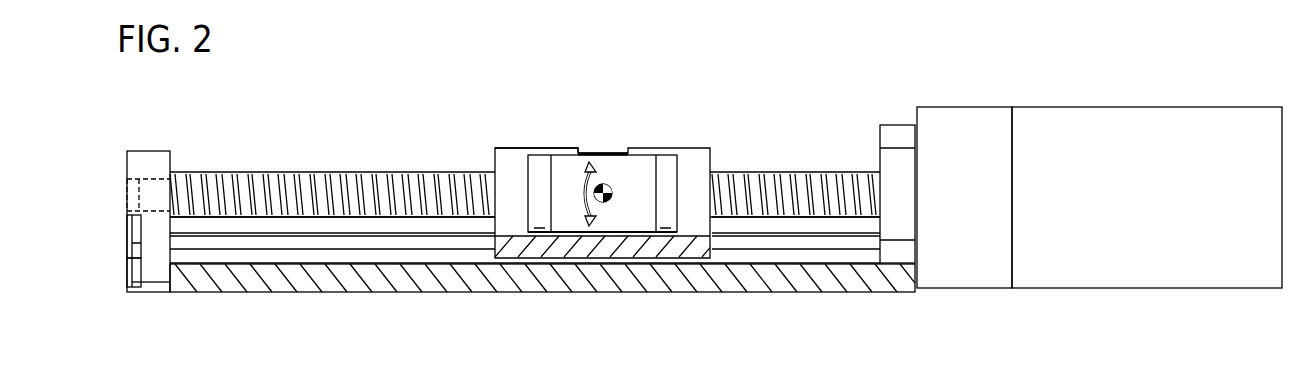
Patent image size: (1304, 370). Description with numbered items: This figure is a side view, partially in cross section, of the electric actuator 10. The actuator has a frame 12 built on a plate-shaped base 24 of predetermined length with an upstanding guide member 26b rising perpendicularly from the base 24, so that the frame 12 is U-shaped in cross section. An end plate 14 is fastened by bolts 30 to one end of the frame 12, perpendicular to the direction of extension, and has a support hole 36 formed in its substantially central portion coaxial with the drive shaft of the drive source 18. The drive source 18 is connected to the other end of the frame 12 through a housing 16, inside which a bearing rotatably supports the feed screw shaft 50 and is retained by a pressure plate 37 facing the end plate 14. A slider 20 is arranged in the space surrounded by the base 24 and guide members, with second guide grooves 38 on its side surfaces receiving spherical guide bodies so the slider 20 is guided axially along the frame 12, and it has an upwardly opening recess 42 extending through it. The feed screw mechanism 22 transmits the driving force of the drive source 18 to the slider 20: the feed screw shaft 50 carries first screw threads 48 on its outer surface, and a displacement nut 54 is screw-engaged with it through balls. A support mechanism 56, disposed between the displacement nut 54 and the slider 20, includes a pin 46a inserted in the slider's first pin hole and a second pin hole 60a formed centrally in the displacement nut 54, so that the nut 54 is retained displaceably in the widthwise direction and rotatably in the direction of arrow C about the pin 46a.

The electric actuator 10 is at (962, 59).
The frame 12 is at (848, 293).
The end plate 14 is at (137, 161).
The housing 16 is at (988, 106).
The drive source 18 is at (1147, 101).
The slider 20 is at (698, 159).
The feed screw mechanism 22 is at (818, 166).
The base 24 is at (300, 284).
The guide member 26b is at (347, 228).
The bolts 30 is at (134, 270).
The support hole 36 is at (126, 190).
The pressure plate 37 is at (905, 219).
The second guide grooves 38 is at (223, 246).
The recess 42 is at (515, 158).
The pin 46a is at (603, 182).
The first screw threads 48 is at (231, 178).
The feed screw shaft 50 is at (283, 173).
The displacement nut 54 is at (635, 212).
The support mechanism 56 is at (628, 170).
The second pin hole 60a is at (606, 203).